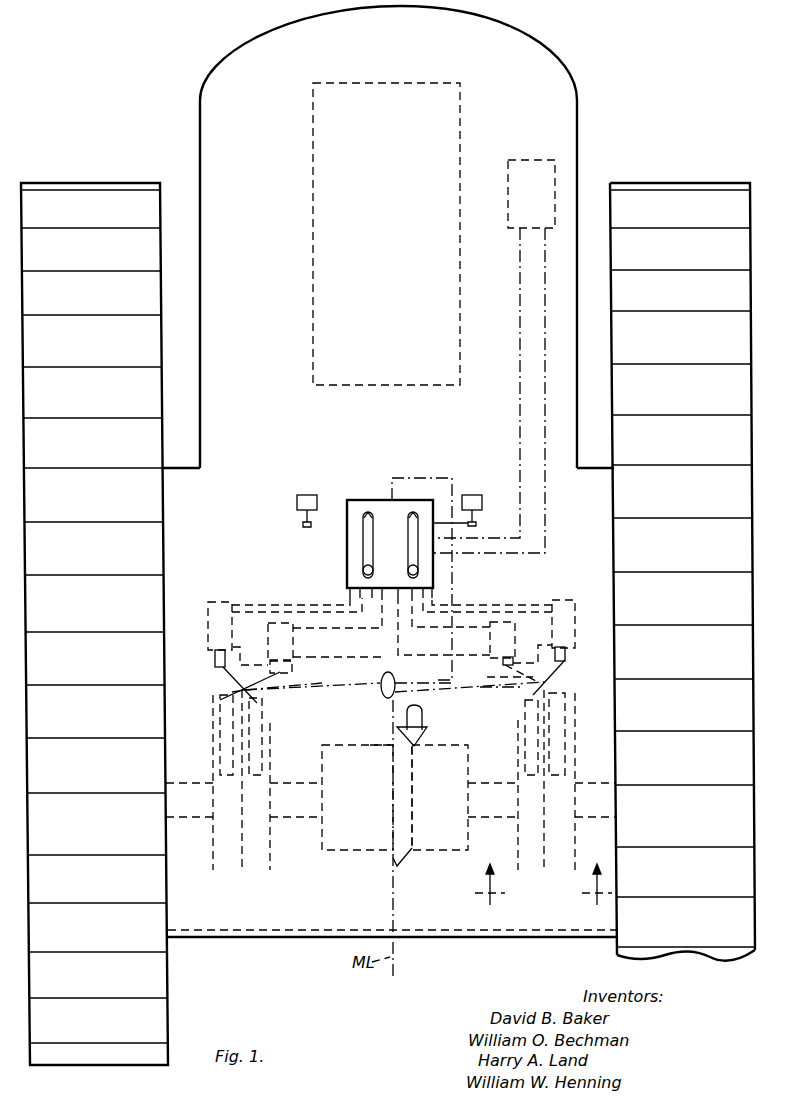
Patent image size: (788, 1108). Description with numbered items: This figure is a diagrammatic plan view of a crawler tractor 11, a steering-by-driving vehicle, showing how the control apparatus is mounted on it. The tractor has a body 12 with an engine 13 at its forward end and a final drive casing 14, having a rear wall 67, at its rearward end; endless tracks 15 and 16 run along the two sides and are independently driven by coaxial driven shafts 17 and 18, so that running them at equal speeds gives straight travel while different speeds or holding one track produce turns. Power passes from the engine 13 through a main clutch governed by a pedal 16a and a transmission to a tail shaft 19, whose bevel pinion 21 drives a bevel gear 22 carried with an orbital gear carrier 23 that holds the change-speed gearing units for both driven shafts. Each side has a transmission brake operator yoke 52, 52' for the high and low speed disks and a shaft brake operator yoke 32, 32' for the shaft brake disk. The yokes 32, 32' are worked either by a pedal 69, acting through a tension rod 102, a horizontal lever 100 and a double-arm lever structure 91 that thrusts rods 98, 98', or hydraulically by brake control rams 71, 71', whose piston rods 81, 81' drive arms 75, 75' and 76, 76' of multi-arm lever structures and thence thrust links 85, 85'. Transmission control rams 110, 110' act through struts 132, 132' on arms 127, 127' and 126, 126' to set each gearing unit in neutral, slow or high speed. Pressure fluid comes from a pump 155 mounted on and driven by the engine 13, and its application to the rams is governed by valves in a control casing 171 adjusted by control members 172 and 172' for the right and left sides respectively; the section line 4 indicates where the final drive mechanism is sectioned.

The crawler tractor 11 is at (196, 94).
The body 12 is at (582, 473).
The engine 13 is at (462, 96).
The final drive casing 14 is at (258, 926).
The endless track 15 is at (63, 207).
The endless track 16 is at (688, 205).
The pedal 16a is at (307, 495).
The driven shaft 17 is at (170, 803).
The driven shaft 18 is at (612, 784).
The tail shaft 19 is at (424, 718).
The bevel pinion 21 is at (416, 748).
The bevel gear 22 is at (393, 743).
The orbital gear carrier 23 is at (335, 762).
The brake operator yoke 32 is at (558, 792).
The brake operator yoke 32' is at (226, 793).
The brake operator yoke 52 is at (512, 737).
The brake operator yoke 52' is at (276, 736).
The rear wall 67 is at (508, 940).
The pedal 69 is at (476, 495).
The ram 71 is at (475, 630).
The ram 71' is at (308, 631).
The arm 75 is at (492, 698).
The arm 76 is at (501, 700).
The thrust link 85 is at (537, 733).
The arm 75' is at (274, 694).
The arm 76' is at (218, 696).
The thrust link 85' is at (209, 735).
The piston rod 81 is at (497, 672).
The piston rod 81' is at (308, 670).
The double-arm lever structure 91 is at (383, 695).
The rod 98 is at (470, 697).
The thrust rod 98' is at (291, 696).
The horizontal lever 100 is at (445, 680).
The tension rod 102 is at (455, 598).
The double piston hydraulic ram 110 is at (508, 608).
The ram 110' is at (270, 608).
The lever arm 126 is at (563, 677).
The lever arm 126' is at (213, 680).
The arm 127 is at (558, 682).
The arm 127' is at (234, 686).
The strut 132 is at (584, 646).
The strut 132' is at (197, 648).
The pump 155 is at (556, 162).
The control casing 171 is at (347, 549).
The control member 172 is at (450, 572).
The control member 172' is at (333, 572).
The section line 4- 4 is at (543, 895).